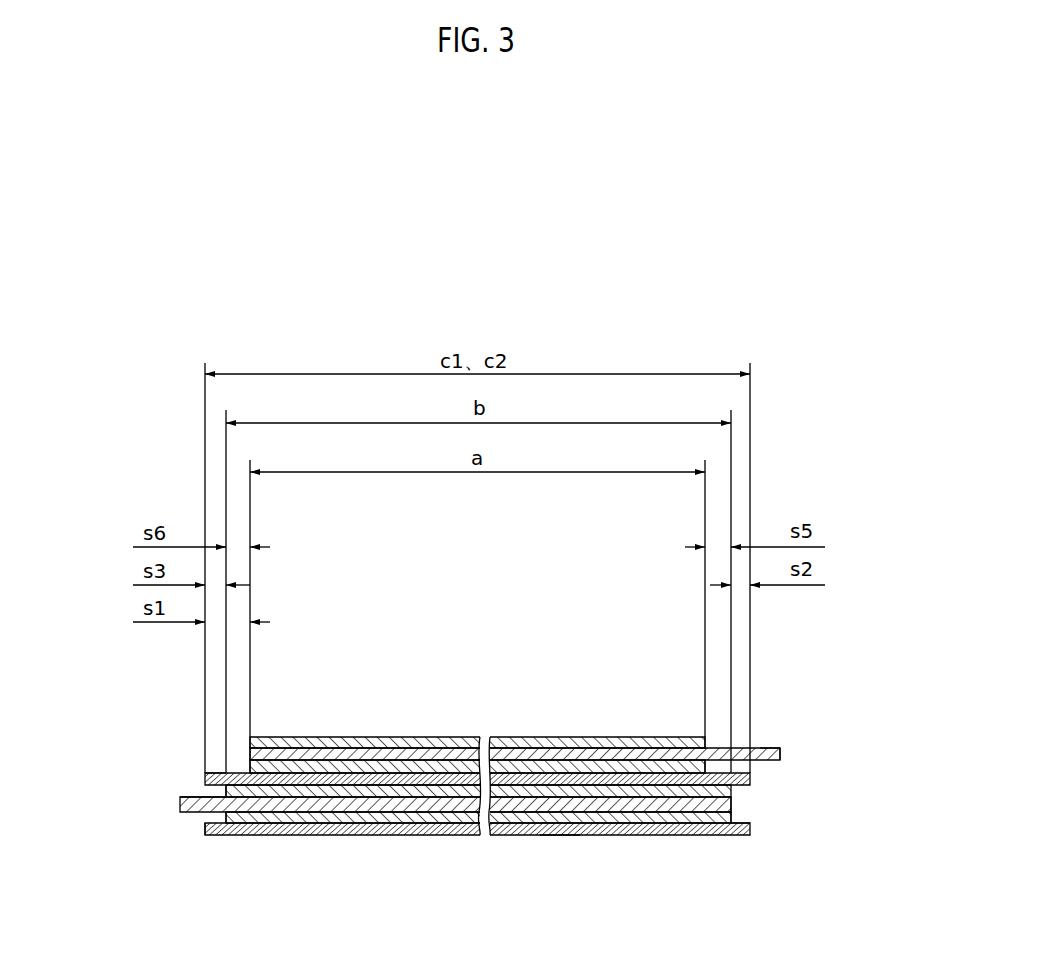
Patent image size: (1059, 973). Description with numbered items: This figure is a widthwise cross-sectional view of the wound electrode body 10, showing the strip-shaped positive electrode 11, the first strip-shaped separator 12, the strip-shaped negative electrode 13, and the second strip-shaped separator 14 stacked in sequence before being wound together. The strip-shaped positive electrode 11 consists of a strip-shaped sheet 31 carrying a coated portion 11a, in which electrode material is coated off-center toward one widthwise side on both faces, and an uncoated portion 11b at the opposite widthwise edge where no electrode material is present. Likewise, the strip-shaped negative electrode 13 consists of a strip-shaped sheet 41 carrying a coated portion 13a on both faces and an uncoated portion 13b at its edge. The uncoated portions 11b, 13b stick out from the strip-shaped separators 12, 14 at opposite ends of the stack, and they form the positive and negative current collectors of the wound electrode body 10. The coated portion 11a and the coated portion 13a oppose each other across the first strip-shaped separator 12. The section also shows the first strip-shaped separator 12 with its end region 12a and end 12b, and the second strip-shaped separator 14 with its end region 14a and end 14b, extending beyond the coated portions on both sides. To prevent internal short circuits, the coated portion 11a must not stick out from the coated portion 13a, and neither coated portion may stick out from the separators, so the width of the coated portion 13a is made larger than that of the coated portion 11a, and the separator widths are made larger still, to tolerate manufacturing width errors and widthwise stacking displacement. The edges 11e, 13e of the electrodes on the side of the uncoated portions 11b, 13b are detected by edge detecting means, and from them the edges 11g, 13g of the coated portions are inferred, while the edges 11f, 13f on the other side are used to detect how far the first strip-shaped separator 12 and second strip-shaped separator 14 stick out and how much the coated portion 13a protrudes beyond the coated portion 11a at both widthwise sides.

The wound electrode body 10 is at (617, 852).
The strip-shaped positive electrode 11 is at (534, 708).
The coated portion of the strip-shaped positive electrode 11a is at (623, 750).
The uncoated portion of the strip-shaped positive electrode 11b is at (780, 748).
The edge of the strip-shaped positive electrode 11e is at (782, 752).
The edge of the coated portion of the strip-shaped positive electrode 11f is at (250, 770).
The edge of the coated portion of the strip-shaped positive electrode 11g is at (705, 770).
The first strip-shaped separator 12 is at (733, 786).
The intermediate sheet 12a is at (752, 775).
The end of intermediate sheet 12b is at (206, 774).
The strip-shaped negative electrode 13 is at (157, 816).
The coated portion of the strip-shaped negative electrode 13a is at (380, 825).
The uncoated portion of the strip-shaped negative electrode 13b is at (180, 797).
The edge of the strip-shaped negative electrode 13e is at (180, 805).
The edge of the coated portion of the strip-shaped negative electrode 13f is at (733, 818).
The edge of the coated portion of the strip-shaped negative electrode 13g is at (227, 786).
The second strip-shaped separator 14 is at (739, 835).
The end of bottom sheet 14a is at (752, 828).
The end of bottom sheet 14b is at (206, 835).
The strip-shaped sheet 31 is at (374, 747).
The strip-shaped sheet 41 is at (558, 834).